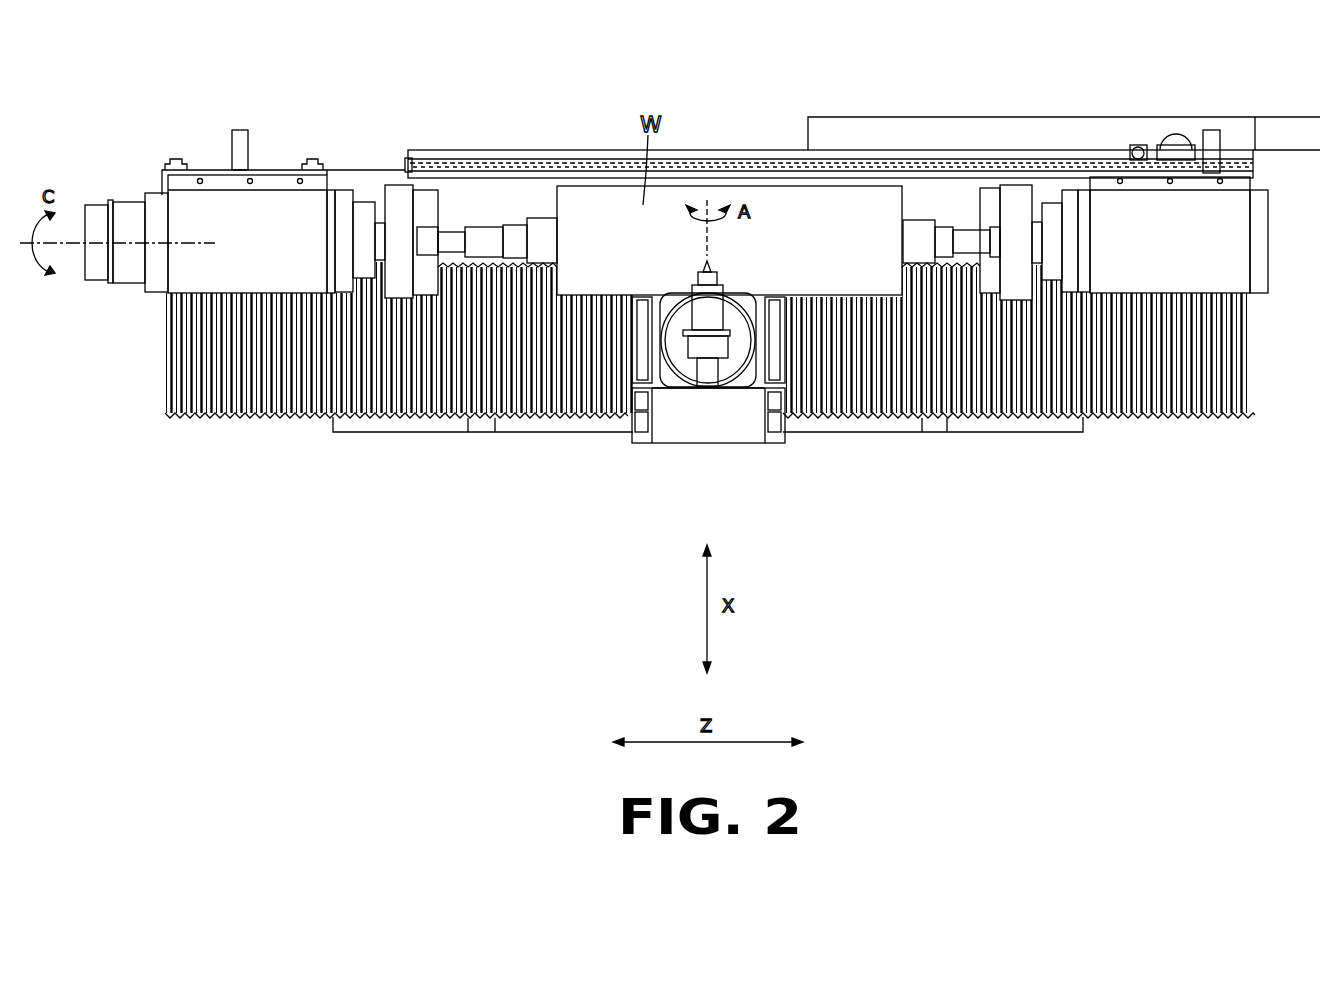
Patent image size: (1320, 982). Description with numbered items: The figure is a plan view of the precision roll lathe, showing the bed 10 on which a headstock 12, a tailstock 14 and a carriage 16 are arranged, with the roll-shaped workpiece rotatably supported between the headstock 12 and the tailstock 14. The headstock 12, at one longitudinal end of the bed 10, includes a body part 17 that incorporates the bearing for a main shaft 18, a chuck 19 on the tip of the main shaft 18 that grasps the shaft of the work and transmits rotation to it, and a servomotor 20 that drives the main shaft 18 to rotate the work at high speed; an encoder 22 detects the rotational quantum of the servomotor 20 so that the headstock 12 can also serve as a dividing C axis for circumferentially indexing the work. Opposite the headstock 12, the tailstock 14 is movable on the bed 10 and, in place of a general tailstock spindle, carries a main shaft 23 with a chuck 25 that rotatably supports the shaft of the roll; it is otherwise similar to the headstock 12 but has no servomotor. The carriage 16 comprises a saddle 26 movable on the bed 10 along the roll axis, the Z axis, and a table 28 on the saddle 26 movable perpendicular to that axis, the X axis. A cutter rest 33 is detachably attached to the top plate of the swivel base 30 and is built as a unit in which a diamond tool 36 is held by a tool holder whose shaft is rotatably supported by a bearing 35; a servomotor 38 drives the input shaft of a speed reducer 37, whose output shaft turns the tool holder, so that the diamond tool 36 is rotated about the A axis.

The bed 10 is at (168, 400).
The headstock 12 is at (260, 206).
The tailstock 14 is at (1146, 215).
The carriage 16 is at (712, 455).
The body part 17 is at (215, 200).
The main shaft 18 is at (362, 213).
The chuck 19 is at (395, 198).
The servomotor 20 is at (132, 265).
The encoder 22 is at (97, 223).
The main shaft 23 is at (1053, 213).
The chuck 25 is at (1018, 197).
The saddle 26 is at (755, 433).
The table 28 is at (672, 382).
The swivel base 30 is at (691, 398).
The cutter rest 33 is at (741, 318).
The bearing 35 is at (698, 308).
The diamond tool 36 is at (700, 262).
The speed reducer 37 is at (713, 342).
The servomotor 38 is at (707, 373).